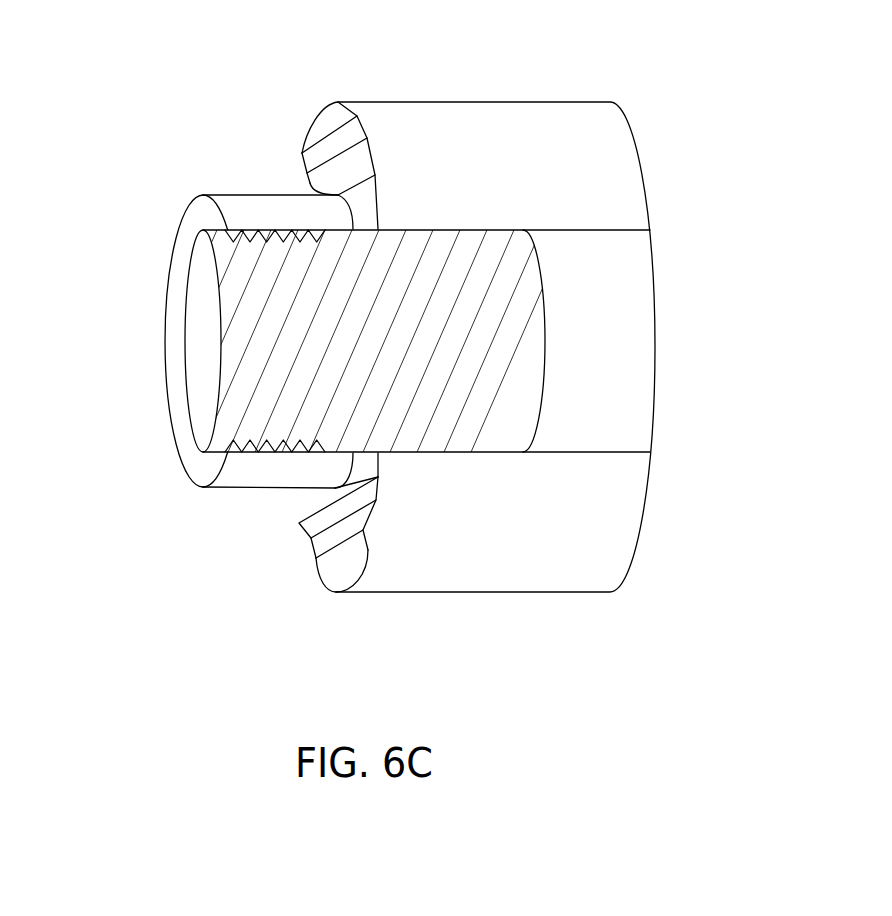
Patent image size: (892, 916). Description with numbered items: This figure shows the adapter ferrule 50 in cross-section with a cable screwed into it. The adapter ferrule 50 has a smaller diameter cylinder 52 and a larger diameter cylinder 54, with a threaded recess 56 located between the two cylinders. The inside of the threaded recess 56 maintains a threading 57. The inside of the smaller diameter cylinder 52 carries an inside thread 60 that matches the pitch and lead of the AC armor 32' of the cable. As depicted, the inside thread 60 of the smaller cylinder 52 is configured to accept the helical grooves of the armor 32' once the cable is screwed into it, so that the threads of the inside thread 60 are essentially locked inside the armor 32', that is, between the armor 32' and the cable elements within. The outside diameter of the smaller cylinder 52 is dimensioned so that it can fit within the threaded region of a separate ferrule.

The adapter ferrule 50 is at (692, 50).
The smaller diameter cylinder 52 is at (233, 470).
The larger diameter cylinder 54 is at (563, 563).
The threaded recess 56 is at (300, 133).
The threading 57 is at (350, 138).
The inside thread 60 is at (277, 452).
The AC armor 32' is at (323, 344).